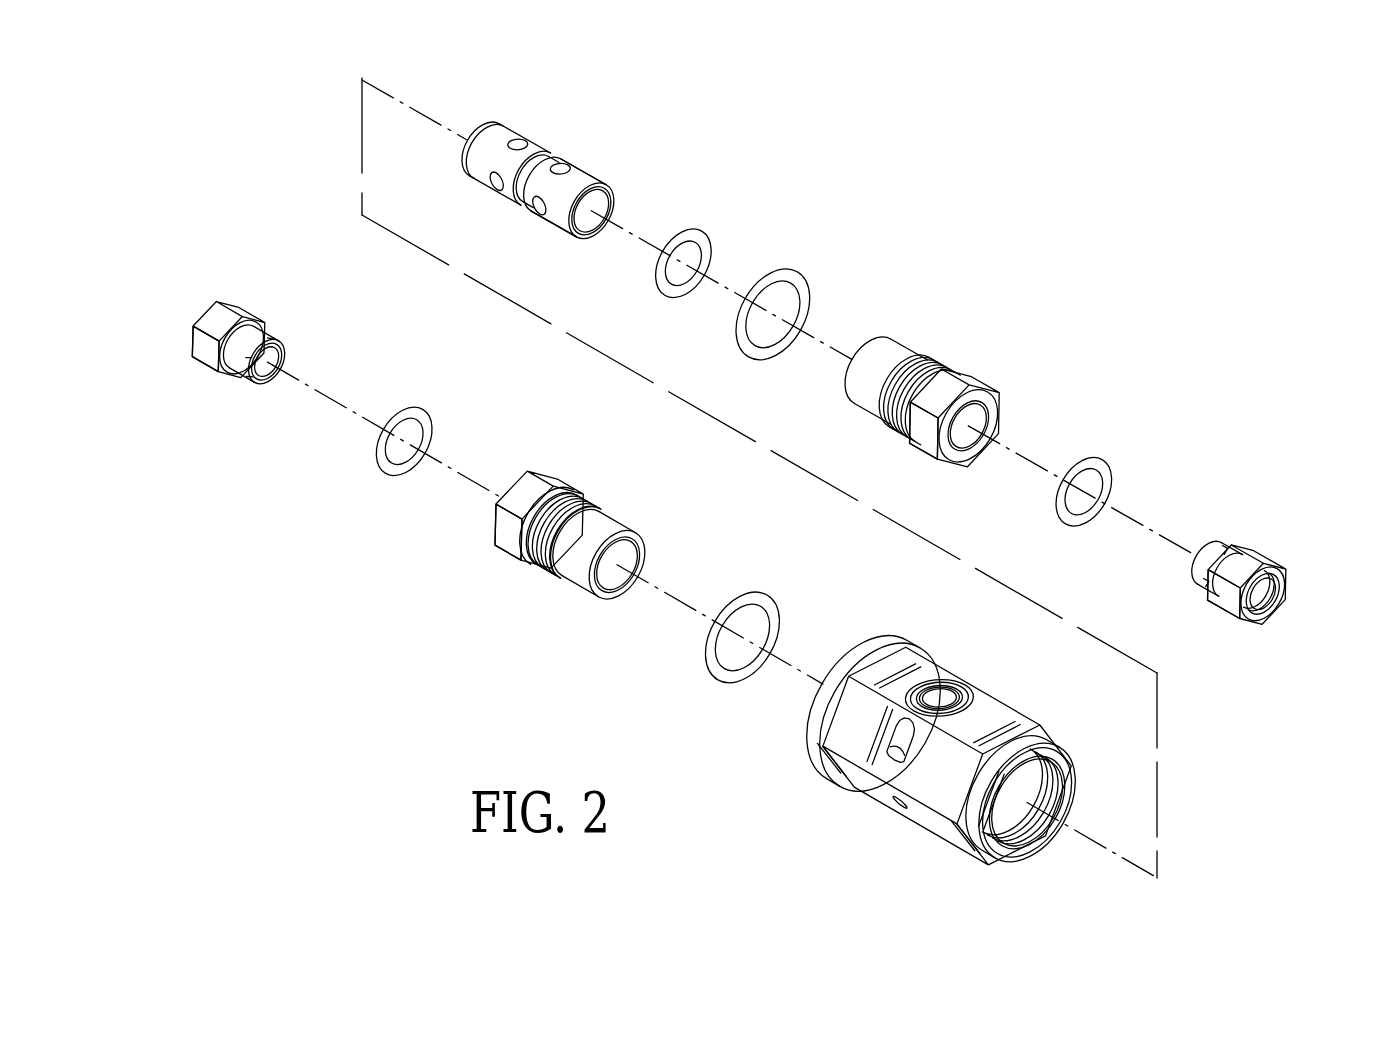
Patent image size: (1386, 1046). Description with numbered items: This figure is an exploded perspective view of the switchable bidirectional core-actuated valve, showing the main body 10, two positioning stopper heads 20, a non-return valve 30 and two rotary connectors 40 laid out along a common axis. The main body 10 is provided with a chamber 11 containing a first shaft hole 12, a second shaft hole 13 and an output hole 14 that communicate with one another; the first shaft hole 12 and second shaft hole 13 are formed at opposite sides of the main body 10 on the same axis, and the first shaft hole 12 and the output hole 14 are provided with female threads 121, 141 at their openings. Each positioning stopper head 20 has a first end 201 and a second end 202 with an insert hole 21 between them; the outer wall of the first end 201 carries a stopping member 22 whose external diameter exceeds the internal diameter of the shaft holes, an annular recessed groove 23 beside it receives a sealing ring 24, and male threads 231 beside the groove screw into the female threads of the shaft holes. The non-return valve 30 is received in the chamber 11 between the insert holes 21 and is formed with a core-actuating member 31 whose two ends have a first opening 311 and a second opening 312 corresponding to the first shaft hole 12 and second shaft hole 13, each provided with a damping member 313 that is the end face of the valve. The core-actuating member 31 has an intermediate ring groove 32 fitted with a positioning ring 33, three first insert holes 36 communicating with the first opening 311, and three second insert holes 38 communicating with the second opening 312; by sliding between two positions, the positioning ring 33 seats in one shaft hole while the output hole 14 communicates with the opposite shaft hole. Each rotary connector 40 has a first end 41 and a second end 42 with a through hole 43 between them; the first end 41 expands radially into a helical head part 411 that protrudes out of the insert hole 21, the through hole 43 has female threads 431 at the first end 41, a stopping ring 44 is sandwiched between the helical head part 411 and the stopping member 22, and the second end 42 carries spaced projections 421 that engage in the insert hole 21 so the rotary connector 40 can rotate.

The main body 10 is at (824, 773).
The chamber 11 is at (1073, 762).
The first shaft hole 12 is at (1070, 810).
The female threads 121 is at (1050, 790).
The second shaft hole 13 is at (805, 722).
The output hole 14 is at (914, 680).
The female threads 141 is at (955, 697).
The positioning stopper head 20 is at (915, 336).
The first end 201 is at (990, 383).
The second end 202 is at (862, 353).
The insert hole 21 is at (621, 583).
The stopping member 22 is at (956, 463).
The annular recessed groove 23 is at (523, 577).
The male threads 231 is at (576, 506).
The sealing ring 24 is at (790, 266).
The non-return valve 30 is at (593, 152).
The core-actuating member 31 is at (512, 125).
The first opening 311 is at (602, 200).
The second opening 312 is at (485, 130).
The damping member 313 is at (593, 237).
The ring groove 32 is at (515, 205).
The positioning ring 33 is at (700, 232).
The first insert holes 36 is at (561, 167).
The second insert holes 38 is at (497, 176).
The rotary connector 40 is at (232, 294).
The first end 41 is at (191, 345).
The helical head part 411 is at (245, 310).
The second end 42 is at (265, 385).
The spaced projections 421 is at (1198, 552).
The through hole 43 is at (278, 354).
The female threads 431 is at (1262, 620).
The stopping ring 44 is at (1092, 460).